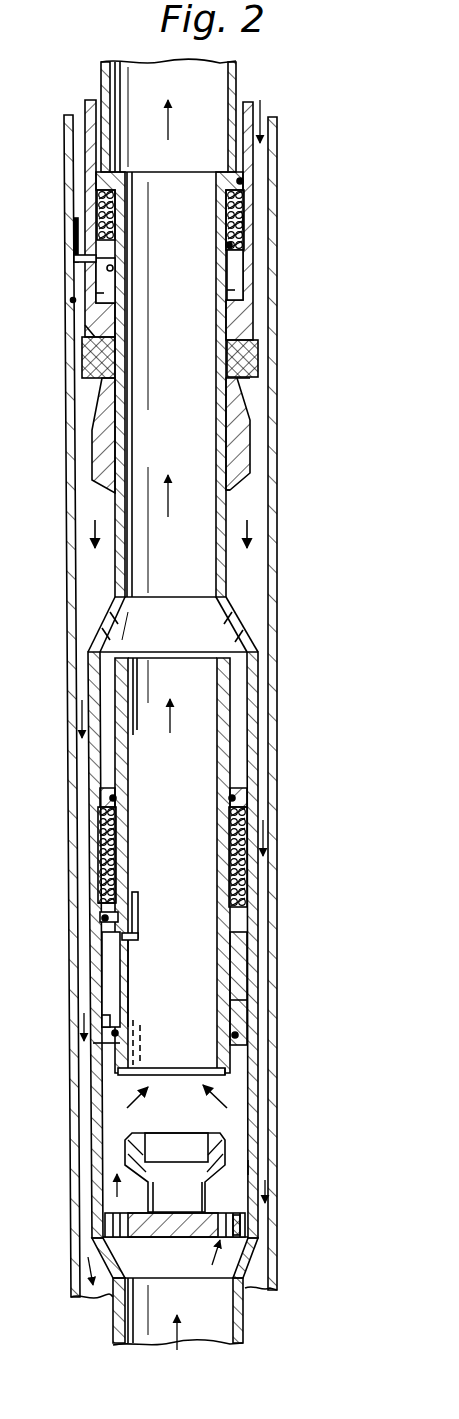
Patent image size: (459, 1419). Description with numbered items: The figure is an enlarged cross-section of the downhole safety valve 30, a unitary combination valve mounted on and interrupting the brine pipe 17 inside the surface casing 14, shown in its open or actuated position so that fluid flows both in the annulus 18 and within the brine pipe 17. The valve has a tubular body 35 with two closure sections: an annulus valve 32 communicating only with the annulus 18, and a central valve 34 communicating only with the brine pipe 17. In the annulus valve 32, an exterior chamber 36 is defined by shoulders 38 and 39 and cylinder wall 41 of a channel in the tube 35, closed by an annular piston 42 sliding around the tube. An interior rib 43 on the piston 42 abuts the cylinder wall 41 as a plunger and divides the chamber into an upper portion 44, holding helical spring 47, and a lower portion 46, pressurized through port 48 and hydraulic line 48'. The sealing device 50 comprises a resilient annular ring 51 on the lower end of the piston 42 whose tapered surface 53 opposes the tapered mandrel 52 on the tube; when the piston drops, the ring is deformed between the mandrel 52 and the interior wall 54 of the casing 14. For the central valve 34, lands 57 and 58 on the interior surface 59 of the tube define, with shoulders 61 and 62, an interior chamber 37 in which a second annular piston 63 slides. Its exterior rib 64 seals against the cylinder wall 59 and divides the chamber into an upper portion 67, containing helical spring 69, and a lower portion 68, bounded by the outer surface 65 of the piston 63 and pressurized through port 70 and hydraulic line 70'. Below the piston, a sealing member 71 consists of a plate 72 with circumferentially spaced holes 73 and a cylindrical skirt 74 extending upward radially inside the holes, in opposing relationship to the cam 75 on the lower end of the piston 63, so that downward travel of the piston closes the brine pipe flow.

The surface casing 14 is at (63, 147).
The brine pipe 17 is at (101, 68).
The annulus 18 is at (80, 133).
The downhole safety valve 30 is at (92, 585).
The annulus valve 32 is at (80, 328).
The central valve 34 is at (120, 1092).
The tubular body 35 is at (222, 567).
The exterior cylinder or chamber 36 is at (235, 270).
The interior cylinder or chamber 37 is at (240, 975).
The shoulder 38 is at (240, 205).
The shoulder 39 is at (107, 297).
The cylinder wall 41 is at (113, 270).
The annular piston 42 is at (246, 178).
The interior rib 43 is at (232, 244).
The upper portion of chamber 44 is at (100, 218).
The lower portion of chamber 46 is at (235, 290).
The helical spring 47 is at (243, 222).
The port 48 is at (55, 271).
The hydraulic line 48' is at (44, 233).
The sealing device 50 is at (253, 385).
The annular ring 51 is at (258, 360).
The tapered mandrel 52 is at (238, 448).
The tapered surface 53 is at (85, 365).
The interior wall of casing 54 is at (70, 300).
The land 57 is at (240, 800).
The land 58 is at (110, 1038).
The interior surface or cylinder wall 59 is at (107, 975).
The shoulder of land 61 is at (100, 818).
The shoulder of land 62 is at (238, 1030).
The second annular piston 63 is at (128, 817).
The exterior rib 64 is at (100, 920).
The outer surface of piston 65 is at (240, 955).
The upper portion of chamber 67 is at (245, 880).
The lower portion of chamber 68 is at (240, 1000).
The helical spring 69 is at (100, 878).
The port 70 is at (147, 983).
The hydraulic line 70' is at (149, 880).
The sealing member 71 is at (238, 1162).
The plate 72 is at (246, 1208).
The holes 73 is at (235, 1225).
The cylindrical skirt or wall 74 is at (125, 1141).
The camming surface or cam 75 is at (228, 1078).